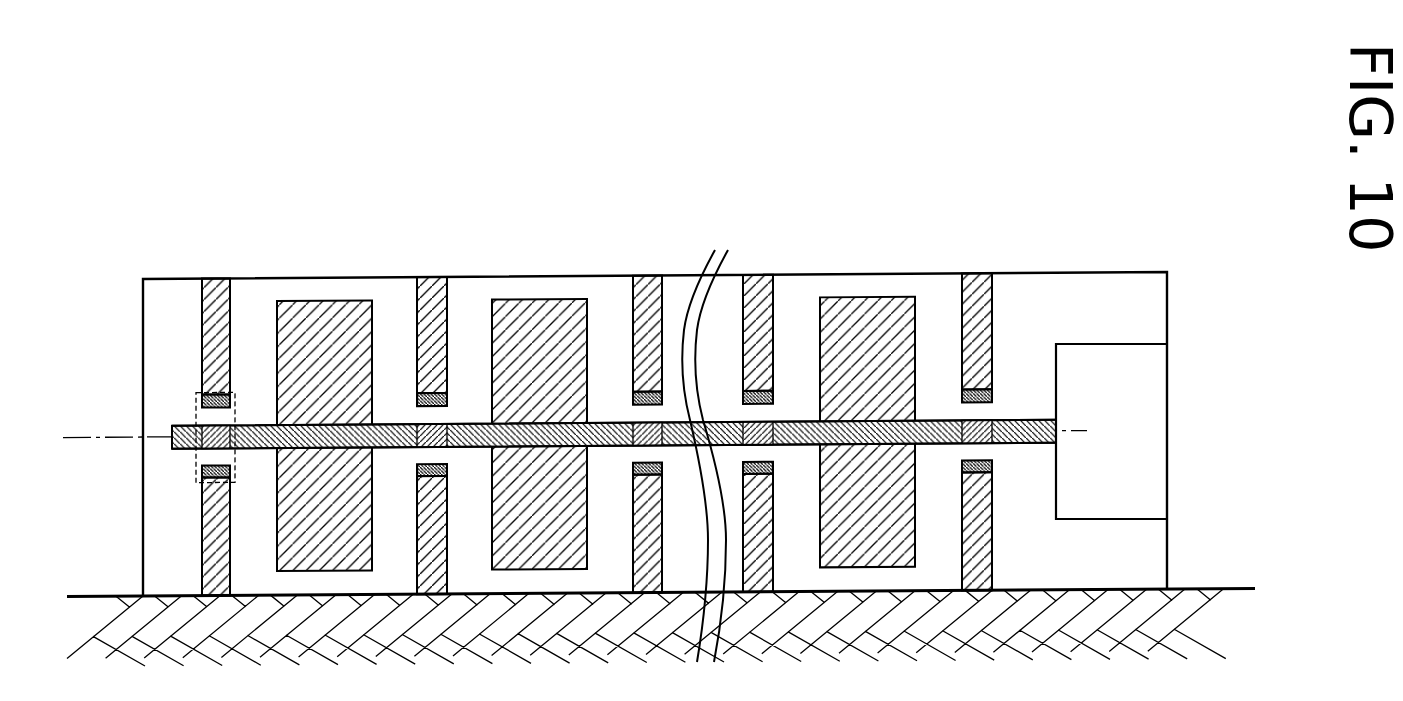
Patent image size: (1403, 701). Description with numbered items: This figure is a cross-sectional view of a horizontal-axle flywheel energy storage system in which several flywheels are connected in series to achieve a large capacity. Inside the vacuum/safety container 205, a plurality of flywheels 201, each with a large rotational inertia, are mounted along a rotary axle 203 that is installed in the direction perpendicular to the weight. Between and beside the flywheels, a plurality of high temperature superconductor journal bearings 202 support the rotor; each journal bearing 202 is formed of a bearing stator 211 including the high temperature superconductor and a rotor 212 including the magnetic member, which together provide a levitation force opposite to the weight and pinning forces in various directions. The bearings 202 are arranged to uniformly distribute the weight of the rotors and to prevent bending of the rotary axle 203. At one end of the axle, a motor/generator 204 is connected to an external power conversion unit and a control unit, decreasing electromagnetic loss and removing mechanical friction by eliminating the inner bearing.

The flywheel 201 is at (318, 301).
The high temperature superconductor journal bearing 202 is at (196, 410).
The rotary axle 203 is at (400, 421).
The motor/generator 204 is at (1163, 344).
The vacuum/safety container 205 is at (933, 274).
The bearing stator 211 is at (773, 460).
The rotor 212 is at (747, 425).